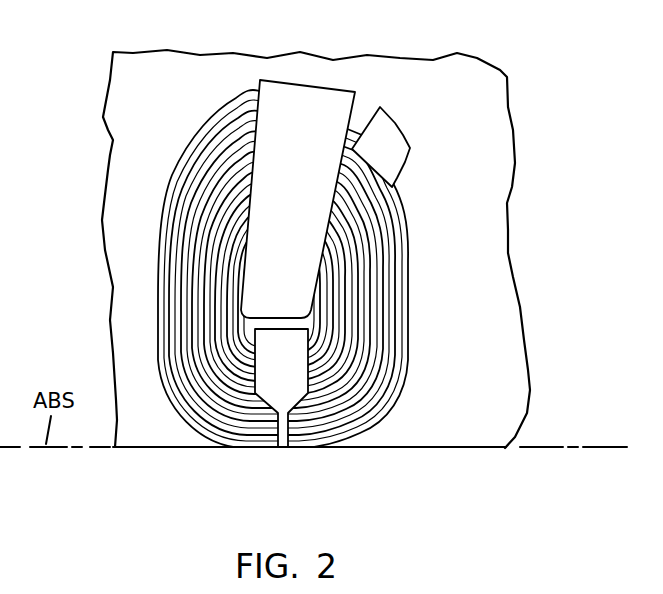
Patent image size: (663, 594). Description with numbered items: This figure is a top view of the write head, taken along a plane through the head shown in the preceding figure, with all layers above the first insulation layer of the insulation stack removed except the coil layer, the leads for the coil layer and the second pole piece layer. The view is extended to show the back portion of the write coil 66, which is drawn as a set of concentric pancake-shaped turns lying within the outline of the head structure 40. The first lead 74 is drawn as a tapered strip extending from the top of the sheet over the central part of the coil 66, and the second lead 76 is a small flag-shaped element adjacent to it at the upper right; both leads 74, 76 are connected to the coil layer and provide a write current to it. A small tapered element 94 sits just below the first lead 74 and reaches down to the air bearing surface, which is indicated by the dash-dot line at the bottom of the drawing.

The write head 40 is at (568, 126).
The coil 66 is at (387, 331).
The first lead 74 is at (306, 202).
The second lead 76 is at (395, 123).
The pole tip 94 is at (298, 377).